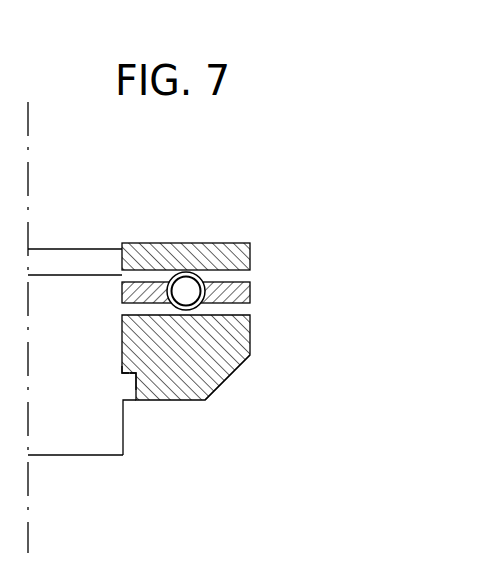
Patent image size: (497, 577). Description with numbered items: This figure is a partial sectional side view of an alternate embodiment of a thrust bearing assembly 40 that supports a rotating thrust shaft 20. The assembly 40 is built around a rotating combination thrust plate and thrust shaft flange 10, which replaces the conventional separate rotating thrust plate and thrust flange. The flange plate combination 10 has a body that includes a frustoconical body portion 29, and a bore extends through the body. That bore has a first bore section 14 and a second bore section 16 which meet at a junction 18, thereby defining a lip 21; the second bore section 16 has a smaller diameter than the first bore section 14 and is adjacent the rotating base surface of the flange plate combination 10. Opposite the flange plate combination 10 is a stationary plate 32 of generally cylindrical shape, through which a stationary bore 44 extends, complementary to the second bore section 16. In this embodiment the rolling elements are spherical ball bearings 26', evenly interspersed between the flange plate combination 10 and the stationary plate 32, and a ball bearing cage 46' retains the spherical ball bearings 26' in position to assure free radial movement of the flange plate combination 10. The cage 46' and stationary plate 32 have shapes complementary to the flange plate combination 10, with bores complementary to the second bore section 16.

The combination thrust plate and thrust shaft flange 10 is at (175, 399).
The first bore section 14 is at (123, 422).
The second bore section 16 is at (122, 340).
The junction 18 is at (136, 380).
The rotating thrust shaft 20 is at (91, 459).
The lip 21 is at (122, 374).
The spherical ball bearings 26' is at (164, 243).
The frustoconical body portion 29 is at (235, 375).
The stationary plate 32 is at (190, 252).
The thrust bearing assembly 40 is at (229, 243).
The stationary bore 44 is at (122, 263).
The ball bearing cage 46' is at (229, 292).